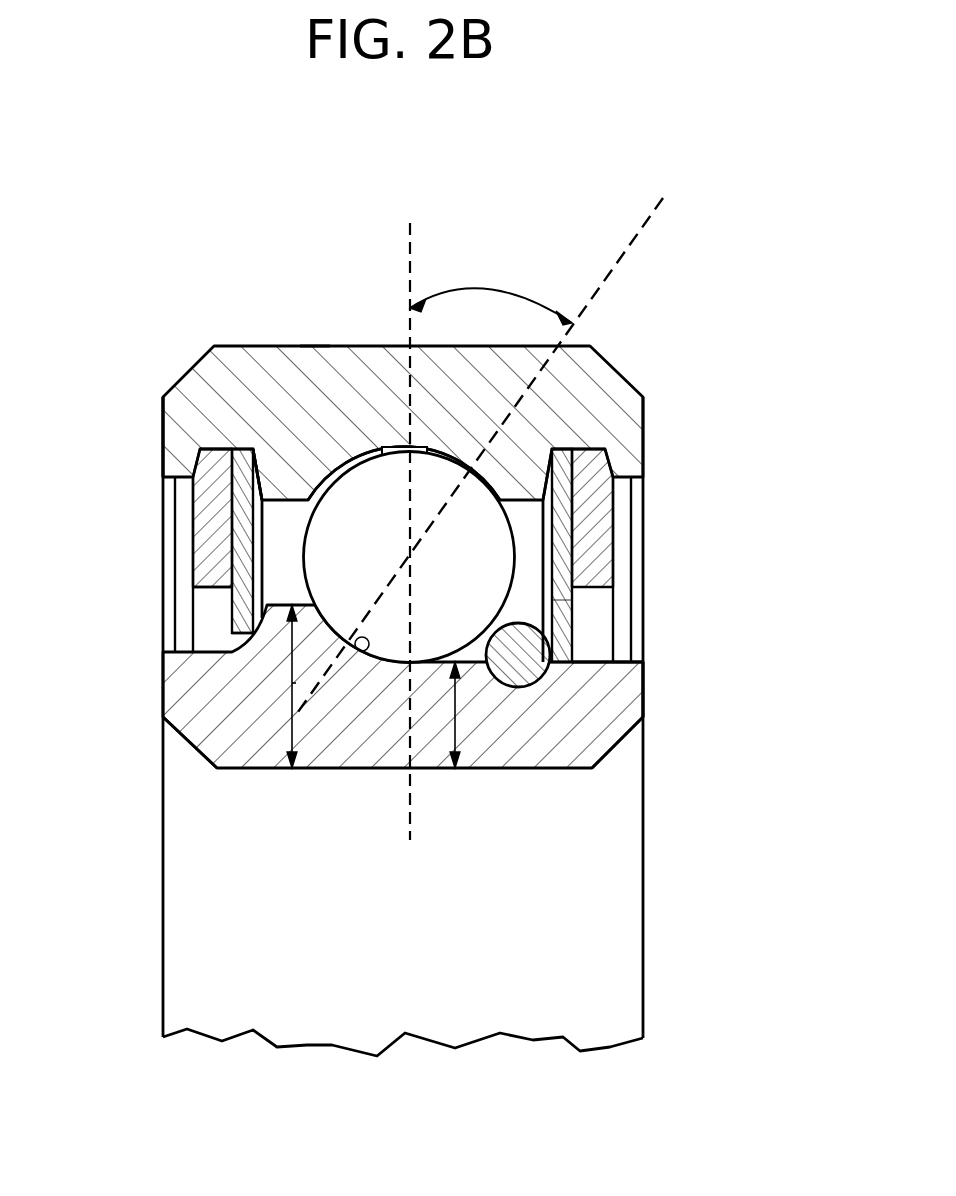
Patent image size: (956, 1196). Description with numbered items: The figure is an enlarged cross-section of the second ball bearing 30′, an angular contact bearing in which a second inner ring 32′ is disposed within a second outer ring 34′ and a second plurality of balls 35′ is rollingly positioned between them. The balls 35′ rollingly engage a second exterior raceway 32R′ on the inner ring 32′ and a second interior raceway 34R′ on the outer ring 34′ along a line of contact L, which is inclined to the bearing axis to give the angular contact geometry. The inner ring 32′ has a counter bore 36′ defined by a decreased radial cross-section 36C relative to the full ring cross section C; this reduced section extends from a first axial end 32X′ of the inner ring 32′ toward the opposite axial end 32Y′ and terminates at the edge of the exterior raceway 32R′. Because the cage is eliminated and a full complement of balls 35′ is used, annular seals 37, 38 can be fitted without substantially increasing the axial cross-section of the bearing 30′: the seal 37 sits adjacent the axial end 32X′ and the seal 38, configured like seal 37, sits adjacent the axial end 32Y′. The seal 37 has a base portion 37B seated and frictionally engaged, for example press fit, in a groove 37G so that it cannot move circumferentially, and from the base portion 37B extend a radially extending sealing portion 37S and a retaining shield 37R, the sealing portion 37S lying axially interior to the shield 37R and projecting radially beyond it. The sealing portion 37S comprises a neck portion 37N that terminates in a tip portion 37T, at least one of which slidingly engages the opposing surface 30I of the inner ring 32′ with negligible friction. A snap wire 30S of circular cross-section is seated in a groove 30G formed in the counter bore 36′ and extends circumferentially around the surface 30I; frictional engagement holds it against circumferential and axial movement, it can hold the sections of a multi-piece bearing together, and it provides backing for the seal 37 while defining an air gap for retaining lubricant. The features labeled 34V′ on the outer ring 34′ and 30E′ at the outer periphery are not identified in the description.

The second ball bearing 30′ is at (408, 183).
The line of contact L is at (627, 250).
The second outer ring 34′ is at (583, 346).
The vent 34V′ is at (313, 346).
The second interior raceway 34R′ is at (383, 450).
The sealing portion 37S is at (218, 478).
The annular seal 38 is at (240, 456).
The retaining shield 37R is at (220, 449).
The outer edge 30E′ is at (163, 413).
The neck portion 37N is at (240, 533).
The tip portion 37T is at (242, 633).
The axial end 32Y′ is at (163, 700).
The ring cross section C is at (290, 684).
The second exterior raceway 32R′ is at (388, 633).
The second plurality of balls 35′ is at (360, 651).
The second inner ring 32′ is at (390, 743).
The decreased radial cross-section 36C is at (478, 745).
The groove 30G is at (517, 687).
The groove 37G is at (573, 447).
The base portion 37B is at (597, 450).
The counter bore 36′ is at (527, 556).
The annular seal 37 is at (573, 658).
The surface 30I is at (590, 660).
The first axial end 32X′ is at (643, 697).
The snap wire 30S is at (523, 672).